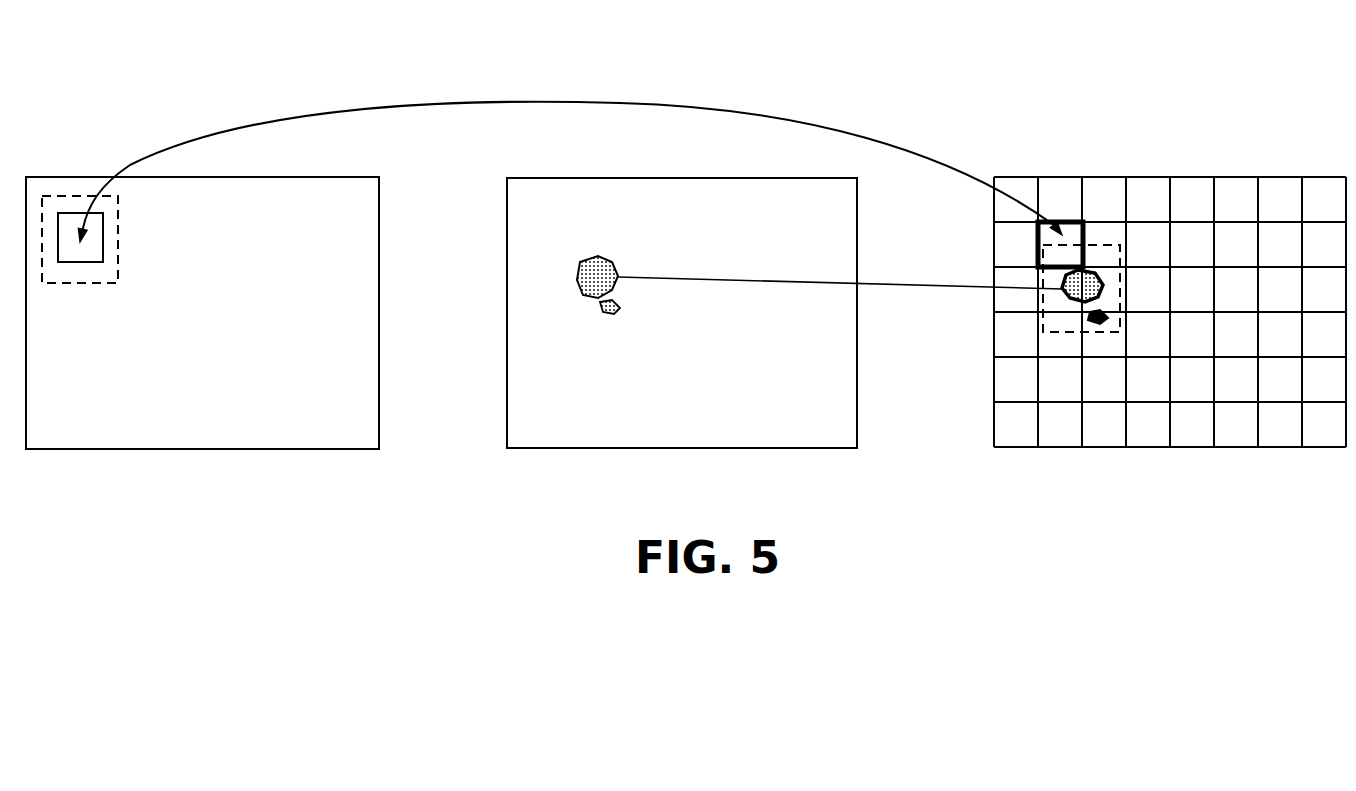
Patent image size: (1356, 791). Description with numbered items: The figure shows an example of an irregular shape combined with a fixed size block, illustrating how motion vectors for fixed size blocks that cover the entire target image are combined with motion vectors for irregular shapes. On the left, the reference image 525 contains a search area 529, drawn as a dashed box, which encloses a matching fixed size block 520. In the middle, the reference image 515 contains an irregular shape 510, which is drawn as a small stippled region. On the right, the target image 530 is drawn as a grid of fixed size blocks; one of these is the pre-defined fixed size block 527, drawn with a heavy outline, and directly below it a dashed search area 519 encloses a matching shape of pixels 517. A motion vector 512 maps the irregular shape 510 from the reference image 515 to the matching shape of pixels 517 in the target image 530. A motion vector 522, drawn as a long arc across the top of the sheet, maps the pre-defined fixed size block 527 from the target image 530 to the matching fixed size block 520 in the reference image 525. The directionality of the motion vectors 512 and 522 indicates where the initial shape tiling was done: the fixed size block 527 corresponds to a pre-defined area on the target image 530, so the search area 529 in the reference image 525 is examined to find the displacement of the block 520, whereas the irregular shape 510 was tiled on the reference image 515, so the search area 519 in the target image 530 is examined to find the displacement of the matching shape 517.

The irregular shape 510 is at (582, 238).
The motion vector 512 is at (920, 289).
The reference image 515 is at (553, 467).
The matching shape of pixels 517 is at (1062, 298).
The search area 519 is at (1097, 335).
The fixed size block 520 is at (86, 277).
The motion vector 522 is at (625, 103).
The reference image 525 is at (221, 467).
The pre-defined fixed size block 527 is at (1096, 228).
The search area 529 is at (118, 220).
The target image 530 is at (1098, 466).